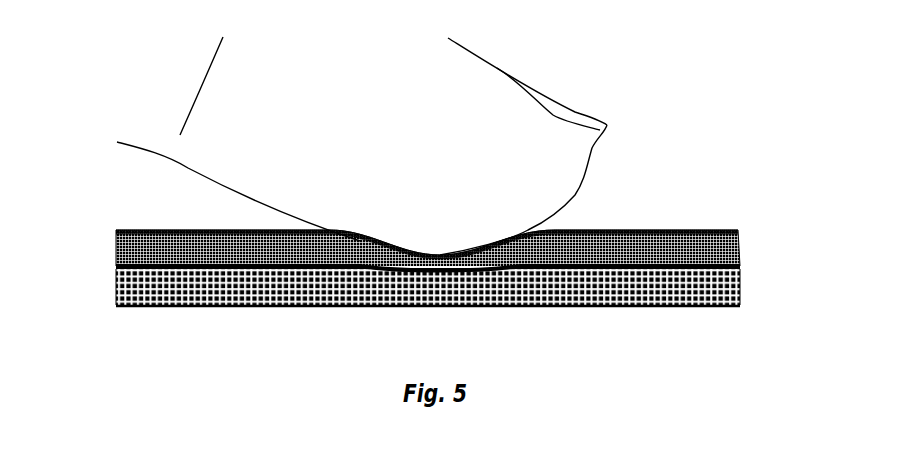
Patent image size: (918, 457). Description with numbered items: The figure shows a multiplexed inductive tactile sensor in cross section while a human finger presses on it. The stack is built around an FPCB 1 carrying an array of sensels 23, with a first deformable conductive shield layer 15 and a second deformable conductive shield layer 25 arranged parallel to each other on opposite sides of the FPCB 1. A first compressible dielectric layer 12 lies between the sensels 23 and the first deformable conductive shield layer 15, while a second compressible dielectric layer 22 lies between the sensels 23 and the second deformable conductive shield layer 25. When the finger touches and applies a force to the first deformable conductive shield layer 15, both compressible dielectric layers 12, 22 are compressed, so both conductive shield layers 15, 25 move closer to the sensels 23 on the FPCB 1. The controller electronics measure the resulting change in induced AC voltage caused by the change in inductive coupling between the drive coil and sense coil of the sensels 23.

The FPCB 1 is at (207, 266).
The first compressible dielectric layer 12 is at (722, 252).
The first deformable conductive shield layer 15 is at (697, 230).
The second compressible dielectric layer 22 is at (133, 288).
The sensels 23 is at (160, 262).
The second deformable conductive shield layer 25 is at (353, 306).